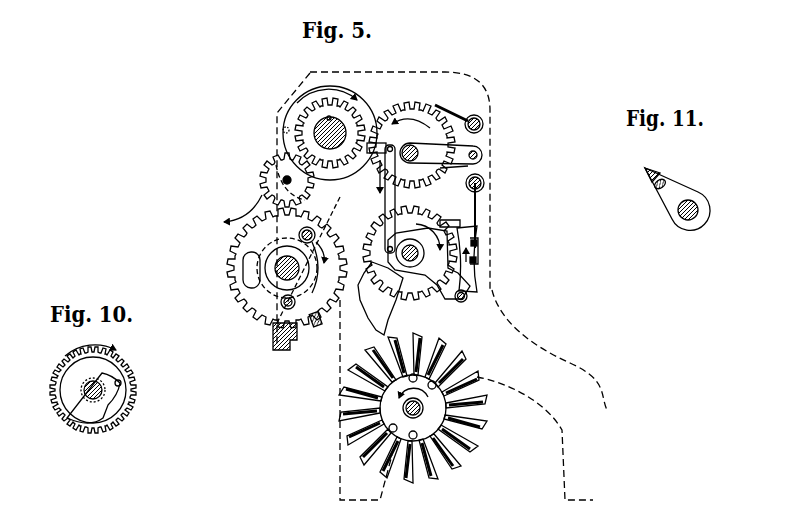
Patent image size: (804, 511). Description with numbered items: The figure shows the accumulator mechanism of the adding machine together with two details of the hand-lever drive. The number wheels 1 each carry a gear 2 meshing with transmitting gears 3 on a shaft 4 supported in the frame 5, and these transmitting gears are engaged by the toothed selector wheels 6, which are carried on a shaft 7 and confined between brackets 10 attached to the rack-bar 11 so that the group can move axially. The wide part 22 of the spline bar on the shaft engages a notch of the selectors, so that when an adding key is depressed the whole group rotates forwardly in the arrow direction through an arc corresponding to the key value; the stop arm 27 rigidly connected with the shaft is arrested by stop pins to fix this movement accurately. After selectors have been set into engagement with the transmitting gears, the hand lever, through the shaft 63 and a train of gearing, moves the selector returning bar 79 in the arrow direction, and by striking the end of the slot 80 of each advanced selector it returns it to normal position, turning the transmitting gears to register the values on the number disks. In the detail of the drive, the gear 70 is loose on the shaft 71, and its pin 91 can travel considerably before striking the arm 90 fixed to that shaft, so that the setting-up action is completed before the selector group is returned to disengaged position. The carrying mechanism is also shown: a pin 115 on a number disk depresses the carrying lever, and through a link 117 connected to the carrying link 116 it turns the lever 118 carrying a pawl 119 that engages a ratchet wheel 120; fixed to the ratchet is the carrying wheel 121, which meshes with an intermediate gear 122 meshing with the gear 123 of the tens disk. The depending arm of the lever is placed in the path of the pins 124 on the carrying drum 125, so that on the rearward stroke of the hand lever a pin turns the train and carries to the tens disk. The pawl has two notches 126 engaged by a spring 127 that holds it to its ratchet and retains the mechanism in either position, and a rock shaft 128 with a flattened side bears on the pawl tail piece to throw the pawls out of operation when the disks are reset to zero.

In FIG. 5, the number wheel 1 is at (281, 107).
In FIG. 5, the gear 2 is at (291, 127).
In FIG. 5, the transmitting gear 3 is at (264, 171).
In FIG. 5, the shaft 4 is at (283, 181).
In FIG. 5, the frame 5 is at (416, 76).
In FIG. 5, the selector wheel 6 is at (232, 242).
In FIG. 5, the shaft 7 is at (282, 270).
In FIG. 11, the shaft 7 is at (680, 220).
In FIG. 5, the bracket 10 is at (284, 304).
In FIG. 5, the rack-bar 11 is at (273, 341).
In FIG. 5, the wide part of spline bar 22 is at (316, 328).
In FIG. 5, the shaft 63 is at (404, 409).
In FIG. 5, the selector returning bar 79 is at (312, 226).
In FIG. 5, the slot 80 is at (314, 238).
In FIG. 5, the pin 115 is at (378, 118).
In FIG. 5, the link 116 is at (441, 153).
In FIG. 5, the link 117 is at (395, 190).
In FIG. 5, the carrying lever 118 is at (386, 319).
In FIG. 5, the pawl 119 is at (478, 253).
In FIG. 5, the ratchet wheel 120 is at (474, 219).
In FIG. 5, the carrying wheel 121 is at (449, 215).
In FIG. 5, the intermediate gear 122 is at (460, 168).
In FIG. 5, the gear of tens disk 123 is at (331, 103).
In FIG. 5, the pin 124 is at (441, 352).
In FIG. 5, the carrying drum 125 is at (413, 408).
In FIG. 5, the notch 126 is at (477, 243).
In FIG. 5, the spring 127 is at (485, 191).
In FIG. 5, the rock shaft 128 is at (468, 298).
In FIG. 10, the gear 70 is at (61, 388).
In FIG. 10, the shaft 71 is at (88, 394).
In FIG. 10, the arm 90 is at (100, 375).
In FIG. 10, the pin 91 is at (122, 383).
In FIG. 11, the stop arm 27 is at (655, 201).